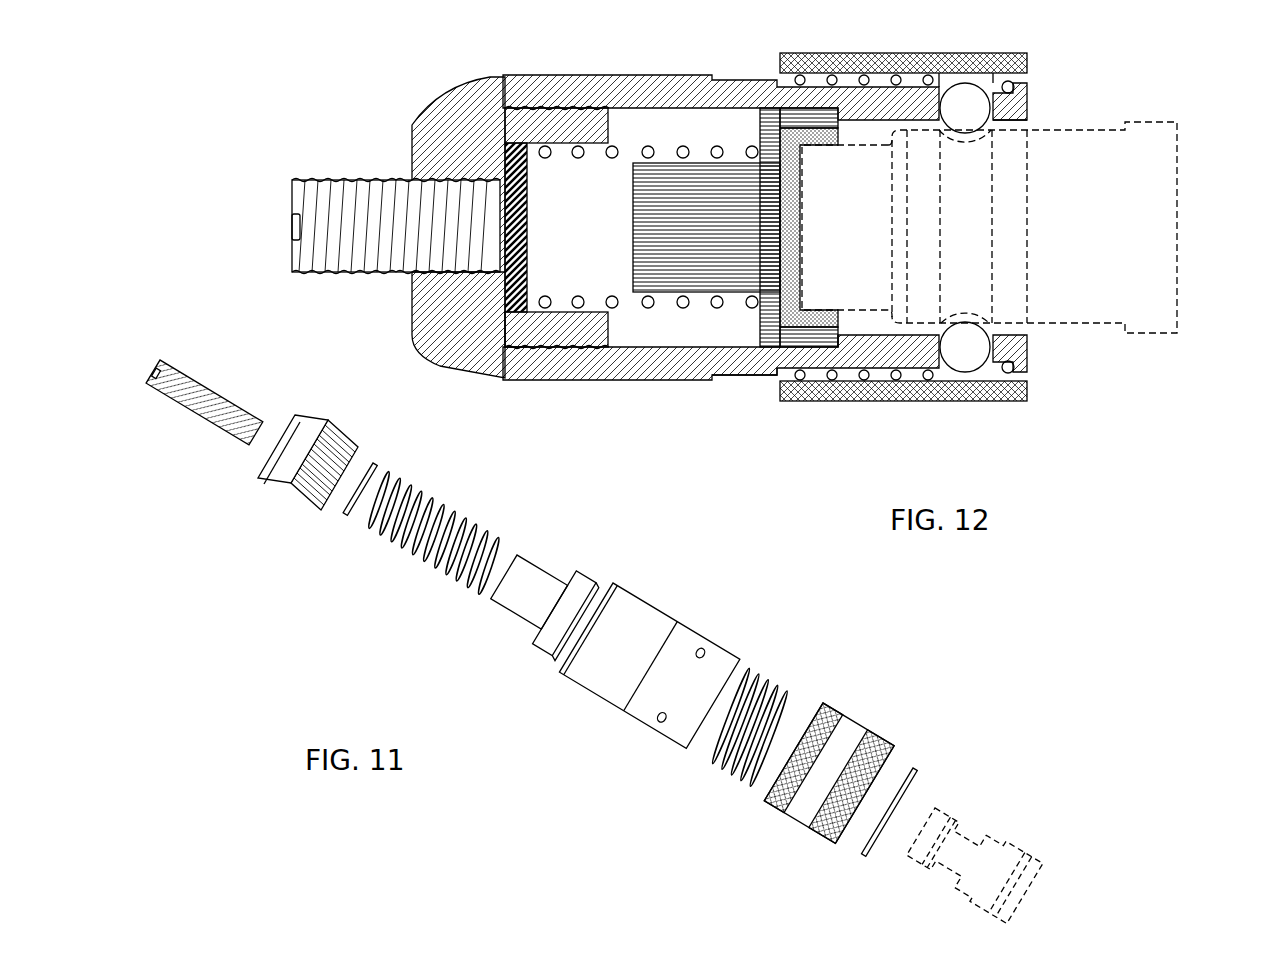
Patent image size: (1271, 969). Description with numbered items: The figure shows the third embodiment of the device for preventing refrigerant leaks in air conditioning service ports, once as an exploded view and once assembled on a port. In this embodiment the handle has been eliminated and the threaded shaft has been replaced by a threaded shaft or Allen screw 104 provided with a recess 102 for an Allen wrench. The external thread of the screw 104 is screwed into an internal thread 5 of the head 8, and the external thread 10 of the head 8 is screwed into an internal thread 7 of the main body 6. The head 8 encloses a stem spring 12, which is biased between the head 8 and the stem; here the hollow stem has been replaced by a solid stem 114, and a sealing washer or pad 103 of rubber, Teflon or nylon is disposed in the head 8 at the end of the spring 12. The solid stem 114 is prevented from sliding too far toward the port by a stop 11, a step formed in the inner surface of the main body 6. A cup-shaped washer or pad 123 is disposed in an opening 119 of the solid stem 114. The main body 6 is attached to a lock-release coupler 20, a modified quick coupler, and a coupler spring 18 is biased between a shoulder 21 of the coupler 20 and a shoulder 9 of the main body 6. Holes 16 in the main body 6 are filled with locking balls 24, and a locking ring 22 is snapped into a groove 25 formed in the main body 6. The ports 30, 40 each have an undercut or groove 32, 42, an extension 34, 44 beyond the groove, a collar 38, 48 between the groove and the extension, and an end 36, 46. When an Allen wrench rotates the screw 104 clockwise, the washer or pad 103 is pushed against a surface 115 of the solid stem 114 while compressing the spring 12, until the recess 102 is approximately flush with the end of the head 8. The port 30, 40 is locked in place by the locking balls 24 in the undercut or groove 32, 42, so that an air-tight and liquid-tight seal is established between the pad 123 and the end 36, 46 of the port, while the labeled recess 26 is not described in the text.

In FIG. 12, the internal thread 5 is at (433, 280).
In FIG. 12, the main body 6 is at (553, 75).
In FIG. 11, the main body 6 is at (590, 694).
In FIG. 12, the internal thread 7 is at (578, 352).
In FIG. 12, the head 8 is at (463, 95).
In FIG. 11, the head 8 is at (262, 478).
In FIG. 12, the shoulder 9 is at (776, 372).
In FIG. 12, the external thread 10 is at (520, 322).
In FIG. 11, the external thread 10 is at (300, 505).
In FIG. 12, the stop 11 is at (842, 340).
In FIG. 12, the stem spring 12 is at (650, 148).
In FIG. 11, the stem spring 12 is at (410, 520).
In FIG. 11, the holes 16 is at (660, 720).
In FIG. 12, the coupler spring 18 is at (805, 378).
In FIG. 11, the coupler spring 18 is at (775, 688).
In FIG. 12, the lock-release coupler 20 is at (1005, 401).
In FIG. 11, the lock-release coupler 20 is at (860, 725).
In FIG. 12, the shoulder 21 is at (940, 77).
In FIG. 12, the locking ring 22 is at (1017, 370).
In FIG. 11, the locking ring 22 is at (913, 768).
In FIG. 12, the locking balls 24 is at (968, 352).
In FIG. 12, the groove 25 is at (1018, 90).
In FIG. 12, the recess 26 is at (1013, 127).
In FIG. 12, the port 30 is at (1038, 188).
In FIG. 11, the port 30 is at (991, 854).
In FIG. 12, the undercut or groove 32 is at (1025, 290).
In FIG. 12, the extension 34 is at (893, 158).
In FIG. 12, the end 36 is at (845, 227).
In FIG. 12, the collar 38 is at (1092, 184).
In FIG. 12, the port 40 is at (1155, 120).
In FIG. 11, the port 40 is at (1010, 848).
In FIG. 12, the undercut or groove 42 is at (978, 318).
In FIG. 12, the extension 44 is at (873, 143).
In FIG. 12, the end 46 is at (804, 205).
In FIG. 12, the collar 48 is at (923, 133).
In FIG. 12, the recess 102 is at (292, 224).
In FIG. 11, the recess 102 is at (158, 368).
In FIG. 12, the washer or pad 103 is at (520, 212).
In FIG. 11, the washer or pad 103 is at (343, 510).
In FIG. 12, the threaded shaft or Allen screw 104 is at (405, 190).
In FIG. 11, the threaded shaft or Allen screw 104 is at (212, 412).
In FIG. 12, the solid stem 114 is at (762, 325).
In FIG. 11, the solid stem 114 is at (520, 612).
In FIG. 12, the surface 115 is at (633, 238).
In FIG. 12, the opening 119 is at (775, 133).
In FIG. 12, the cup-shaped washer or pad 123 is at (790, 262).